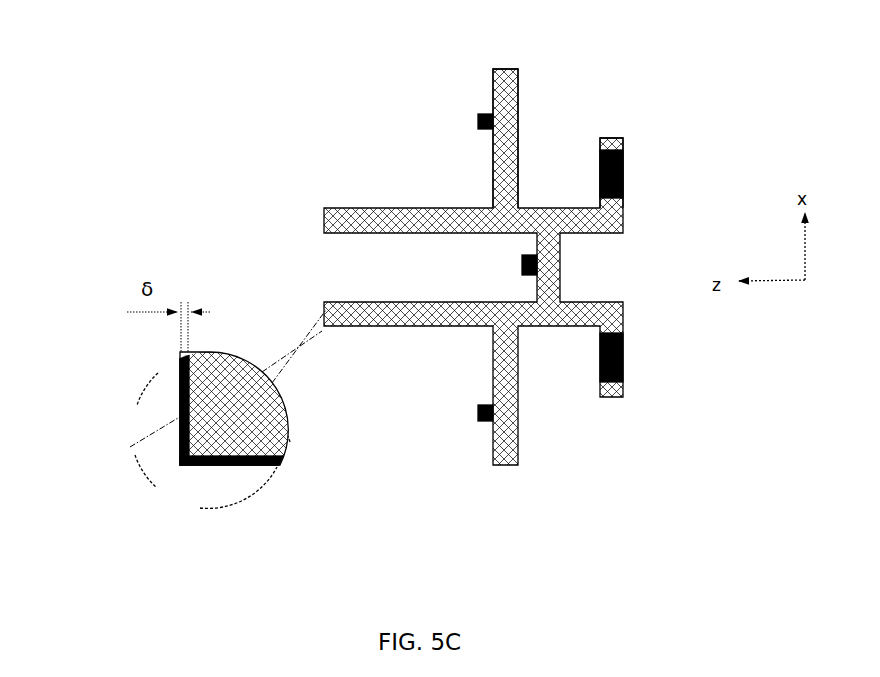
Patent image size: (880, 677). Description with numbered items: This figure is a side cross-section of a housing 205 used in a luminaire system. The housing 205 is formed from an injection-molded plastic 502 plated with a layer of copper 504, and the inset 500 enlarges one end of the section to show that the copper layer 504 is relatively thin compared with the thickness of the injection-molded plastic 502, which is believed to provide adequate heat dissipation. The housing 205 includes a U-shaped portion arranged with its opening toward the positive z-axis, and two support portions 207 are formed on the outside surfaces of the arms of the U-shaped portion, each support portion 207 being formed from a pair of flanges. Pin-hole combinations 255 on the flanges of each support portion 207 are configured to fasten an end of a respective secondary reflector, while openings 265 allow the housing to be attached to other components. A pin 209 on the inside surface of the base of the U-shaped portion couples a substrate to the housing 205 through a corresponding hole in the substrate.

The housing 205 is at (701, 111).
The support portion 207 is at (608, 136).
The pin 209 is at (519, 258).
The pin-hole combination 255 is at (481, 400).
The opening 265 is at (628, 189).
The inset 500 is at (135, 394).
The injection-molded plastic 502 is at (240, 410).
The copper layer 504 is at (326, 308).